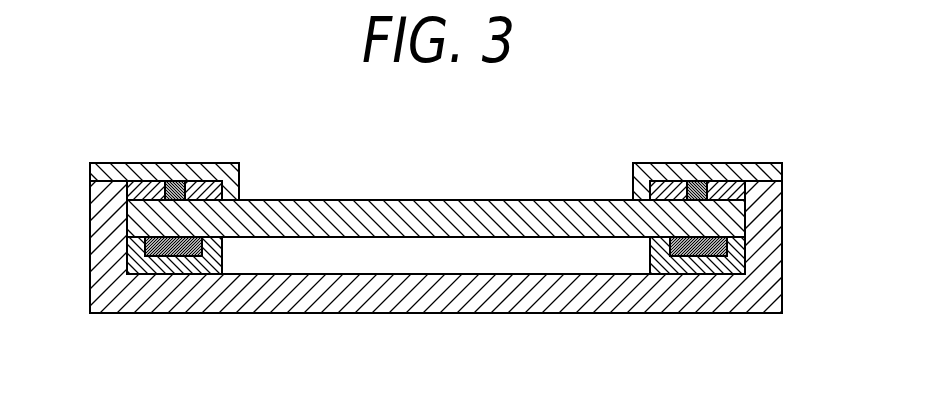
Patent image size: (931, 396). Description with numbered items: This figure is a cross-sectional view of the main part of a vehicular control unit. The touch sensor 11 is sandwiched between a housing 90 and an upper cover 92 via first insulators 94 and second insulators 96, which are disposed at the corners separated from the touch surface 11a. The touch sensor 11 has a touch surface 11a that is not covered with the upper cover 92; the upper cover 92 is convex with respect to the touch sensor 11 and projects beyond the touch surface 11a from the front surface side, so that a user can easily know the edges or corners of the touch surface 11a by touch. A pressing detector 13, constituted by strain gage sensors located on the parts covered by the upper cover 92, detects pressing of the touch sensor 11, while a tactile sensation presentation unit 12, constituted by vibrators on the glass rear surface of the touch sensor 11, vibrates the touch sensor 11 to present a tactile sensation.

The housing 90 is at (435, 313).
The upper cover 92 is at (218, 163).
The touch sensor 11 is at (368, 205).
The touch surface 11a is at (448, 200).
The second insulator 96 is at (143, 190).
The first insulator 94 is at (137, 262).
The pressing detector 13 is at (173, 182).
The tactile sensation presentation unit 12 is at (168, 258).